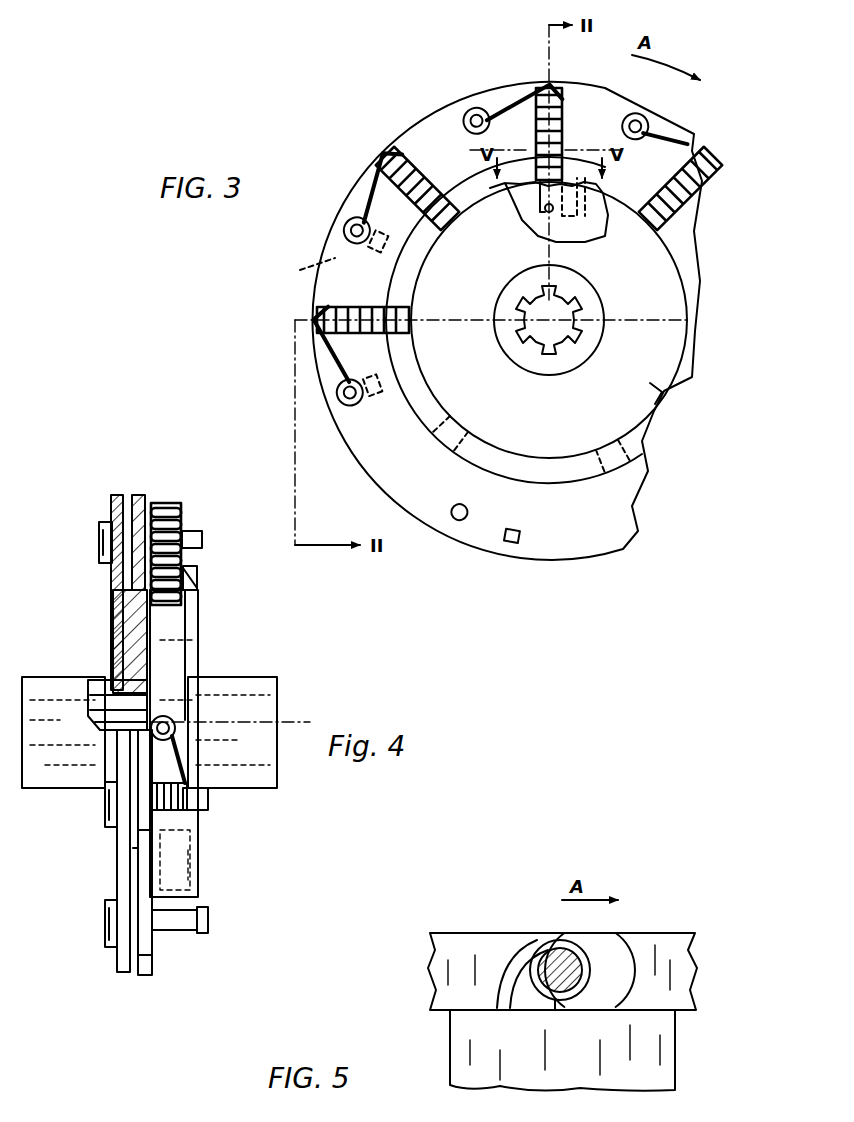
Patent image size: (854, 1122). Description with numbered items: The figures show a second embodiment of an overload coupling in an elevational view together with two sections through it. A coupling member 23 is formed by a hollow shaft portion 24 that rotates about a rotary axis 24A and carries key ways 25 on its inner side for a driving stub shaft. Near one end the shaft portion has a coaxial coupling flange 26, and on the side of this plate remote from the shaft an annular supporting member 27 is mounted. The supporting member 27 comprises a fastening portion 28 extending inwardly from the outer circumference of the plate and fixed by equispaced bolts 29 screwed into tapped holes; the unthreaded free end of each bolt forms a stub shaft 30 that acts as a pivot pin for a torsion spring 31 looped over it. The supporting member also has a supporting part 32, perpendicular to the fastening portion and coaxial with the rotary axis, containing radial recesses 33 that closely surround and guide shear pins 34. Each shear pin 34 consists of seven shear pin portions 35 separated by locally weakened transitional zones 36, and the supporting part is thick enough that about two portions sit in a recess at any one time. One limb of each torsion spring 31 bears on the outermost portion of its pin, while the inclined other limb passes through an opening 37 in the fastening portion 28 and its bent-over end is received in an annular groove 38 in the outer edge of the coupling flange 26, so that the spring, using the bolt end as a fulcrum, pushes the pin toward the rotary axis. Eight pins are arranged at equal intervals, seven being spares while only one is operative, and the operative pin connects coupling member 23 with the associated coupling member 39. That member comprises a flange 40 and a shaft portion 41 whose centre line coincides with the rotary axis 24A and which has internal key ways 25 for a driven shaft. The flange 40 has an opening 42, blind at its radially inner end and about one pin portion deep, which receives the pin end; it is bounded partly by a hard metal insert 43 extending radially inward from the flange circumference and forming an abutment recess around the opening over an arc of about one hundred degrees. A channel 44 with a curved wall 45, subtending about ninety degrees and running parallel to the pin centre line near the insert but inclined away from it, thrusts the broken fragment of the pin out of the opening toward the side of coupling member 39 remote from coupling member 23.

In FIG. 4, the coupling member 23 is at (110, 610).
In FIG. 4, the hollow shaft portion 24 is at (38, 680).
In FIG. 3, the rotary axis 24A is at (585, 328).
In FIG. 4, the rotary axis 24A is at (286, 722).
In FIG. 3, the key ways 25 is at (582, 318).
In FIG. 4, the key ways 25 is at (104, 690).
In FIG. 4, the coupling flange 26 is at (110, 586).
In FIG. 3, the annular supporting member 27 is at (482, 90).
In FIG. 4, the annular supporting member 27 is at (156, 968).
In FIG. 3, the fastening portion 28 is at (542, 547).
In FIG. 4, the fastening portion 28 is at (122, 495).
In FIG. 4, the bolts 29 is at (100, 538).
In FIG. 3, the stub shaft 30 is at (648, 122).
In FIG. 4, the stub shaft 30 is at (206, 538).
In FIG. 3, the torsion spring 31 is at (368, 190).
In FIG. 4, the torsion spring 31 is at (190, 762).
In FIG. 3, the supporting part 32 is at (672, 238).
In FIG. 4, the supporting part 32 is at (198, 590).
In FIG. 3, the radial recesses 33 is at (458, 402).
In FIG. 4, the radial recesses 33 is at (198, 574).
In FIG. 3, the shear pins 34 is at (564, 102).
In FIG. 4, the shear pins 34 is at (184, 512).
In FIG. 5, the shear pins 34 is at (540, 932).
In FIG. 3, the shear pin portions 35 is at (396, 150).
In FIG. 4, the shear pin portions 35 is at (164, 502).
In FIG. 5, the shear pin portions 35 is at (582, 970).
In FIG. 3, the transitional zones 36 is at (572, 148).
In FIG. 4, the transitional zones 36 is at (188, 520).
In FIG. 3, the opening 37 is at (336, 250).
In FIG. 4, the opening 37 is at (150, 840).
In FIG. 3, the annular groove 38 is at (300, 270).
In FIG. 3, the coupling member 39 is at (597, 430).
In FIG. 4, the coupling member 39 is at (190, 630).
In FIG. 5, the coupling member 39 is at (490, 910).
In FIG. 3, the flange 40 is at (664, 392).
In FIG. 4, the flange 40 is at (180, 664).
In FIG. 5, the flange 40 is at (440, 968).
In FIG. 3, the shaft portion 41 is at (510, 290).
In FIG. 4, the shaft portion 41 is at (278, 680).
In FIG. 5, the shaft portion 41 is at (452, 1068).
In FIG. 3, the opening 42 is at (524, 160).
In FIG. 5, the opening 42 is at (570, 1005).
In FIG. 3, the hard metal insert 43 is at (560, 182).
In FIG. 4, the hard metal insert 43 is at (190, 640).
In FIG. 5, the hard metal insert 43 is at (610, 948).
In FIG. 5, the channel 44 is at (538, 1000).
In FIG. 5, the curved wall 45 is at (504, 1010).